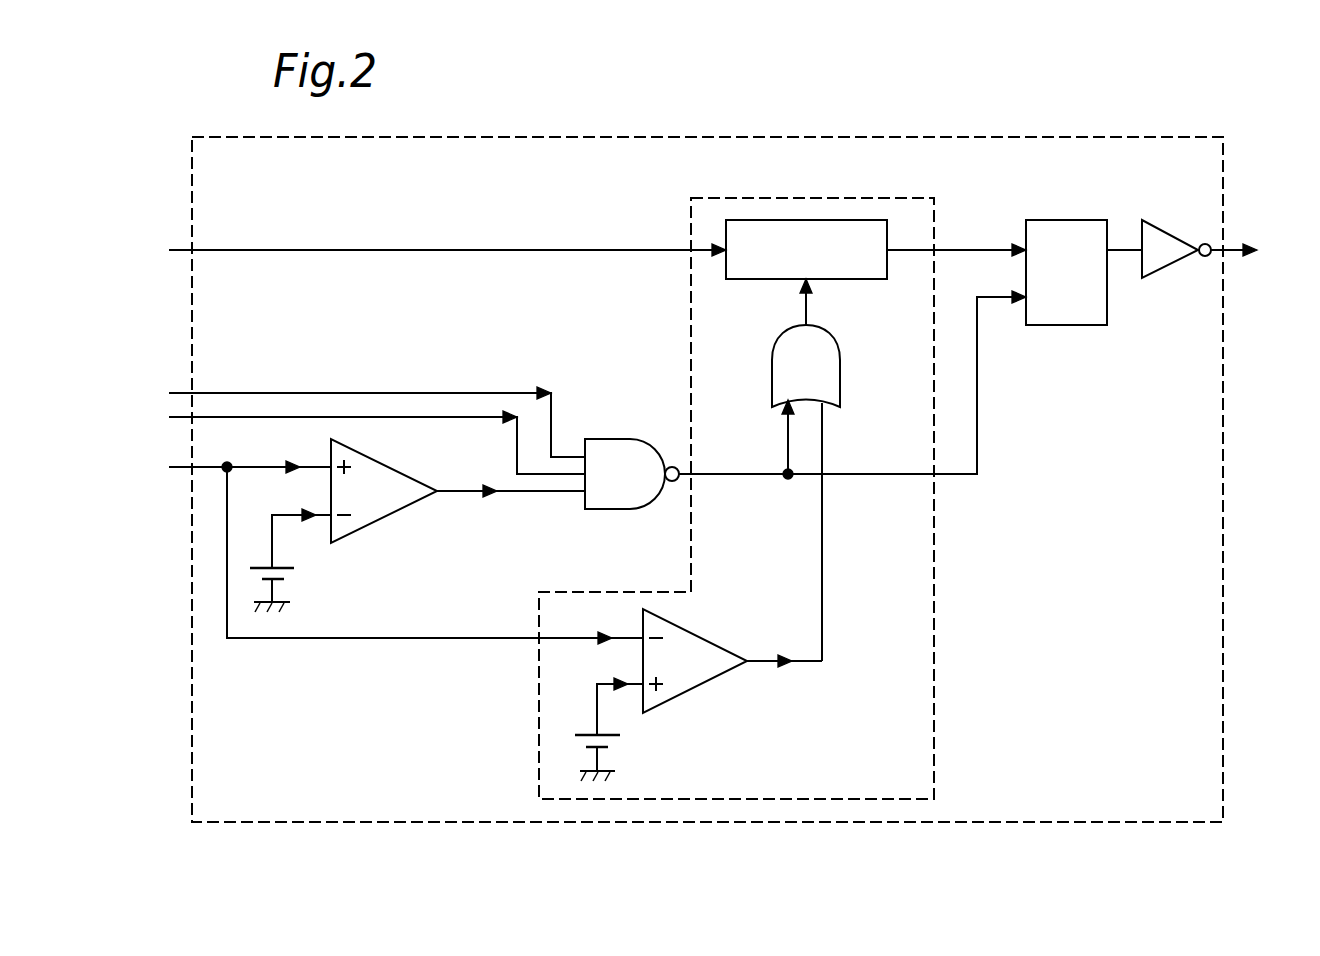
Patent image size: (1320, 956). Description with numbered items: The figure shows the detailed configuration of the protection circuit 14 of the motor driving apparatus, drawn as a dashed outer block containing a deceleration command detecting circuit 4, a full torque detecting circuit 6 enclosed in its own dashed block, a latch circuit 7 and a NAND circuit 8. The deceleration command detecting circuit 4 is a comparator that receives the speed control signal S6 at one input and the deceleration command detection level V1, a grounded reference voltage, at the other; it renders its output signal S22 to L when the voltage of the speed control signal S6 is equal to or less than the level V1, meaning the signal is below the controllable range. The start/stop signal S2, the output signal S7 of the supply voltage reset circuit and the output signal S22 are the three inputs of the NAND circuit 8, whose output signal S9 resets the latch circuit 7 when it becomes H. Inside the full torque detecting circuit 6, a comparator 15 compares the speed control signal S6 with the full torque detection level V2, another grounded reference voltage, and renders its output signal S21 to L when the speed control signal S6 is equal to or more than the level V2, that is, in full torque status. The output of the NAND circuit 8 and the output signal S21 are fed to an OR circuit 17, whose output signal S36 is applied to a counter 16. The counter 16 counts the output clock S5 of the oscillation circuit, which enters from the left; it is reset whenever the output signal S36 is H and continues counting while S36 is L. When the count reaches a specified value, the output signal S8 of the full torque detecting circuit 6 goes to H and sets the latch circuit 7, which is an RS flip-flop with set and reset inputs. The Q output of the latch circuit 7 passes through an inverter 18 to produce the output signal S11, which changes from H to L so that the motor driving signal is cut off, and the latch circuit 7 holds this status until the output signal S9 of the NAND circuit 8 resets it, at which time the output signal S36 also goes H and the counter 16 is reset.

The deceleration command detecting circuit 4 is at (390, 520).
The full torque detecting circuit 6 is at (934, 740).
The latch circuit 7 is at (1071, 220).
The NAND circuit 8 is at (612, 437).
The protection circuit 14 is at (1223, 680).
The comparator 15 is at (703, 686).
The counter 16 is at (748, 220).
The OR circuit 17 is at (838, 372).
The inverter 18 is at (1183, 240).
The start/stop signal S2 is at (357, 438).
The output clock S5 is at (428, 250).
The speed control signal S6 is at (386, 548).
The output signal of the supply voltage reset circuit S7 is at (357, 417).
The output signal S8 is at (958, 250).
The output signal of the NAND circuit S9 is at (965, 478).
The output signal S11 is at (1263, 250).
The output signal of the comparator S21 is at (826, 585).
The output signal of the deceleration command detecting circuit S22 is at (500, 495).
The output signal of the OR circuit S36 is at (808, 305).
The deceleration command detection level V1 is at (292, 560).
The full torque detection level V2 is at (618, 729).